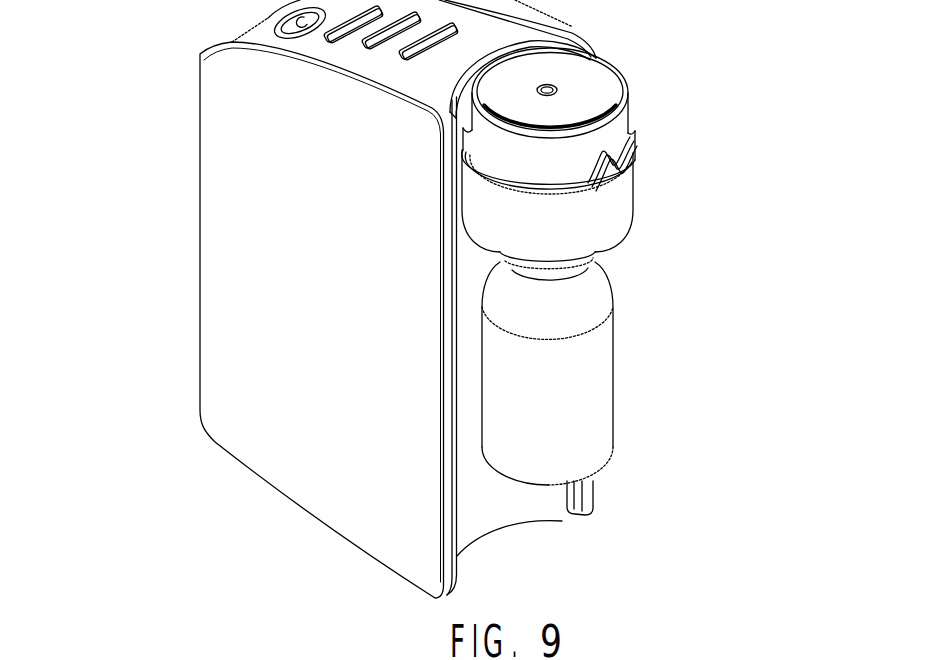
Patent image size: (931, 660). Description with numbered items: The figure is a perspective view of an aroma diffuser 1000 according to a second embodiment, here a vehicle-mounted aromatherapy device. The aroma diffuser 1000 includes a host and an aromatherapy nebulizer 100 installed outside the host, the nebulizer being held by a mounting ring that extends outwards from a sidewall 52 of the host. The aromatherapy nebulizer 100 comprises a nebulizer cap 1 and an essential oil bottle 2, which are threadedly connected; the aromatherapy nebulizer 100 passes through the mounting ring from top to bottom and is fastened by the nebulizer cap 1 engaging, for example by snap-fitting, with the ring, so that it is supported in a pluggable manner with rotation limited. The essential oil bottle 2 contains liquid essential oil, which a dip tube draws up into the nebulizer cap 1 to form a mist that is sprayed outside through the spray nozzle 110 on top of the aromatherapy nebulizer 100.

The aroma diffuser 1000 is at (153, 148).
The aromatherapy nebulizer 100 is at (742, 118).
The nebulizer cap 1 is at (614, 135).
The spray nozzle 110 is at (557, 88).
The essential oil bottle 2 is at (620, 393).
The sidewall 52 is at (528, 505).